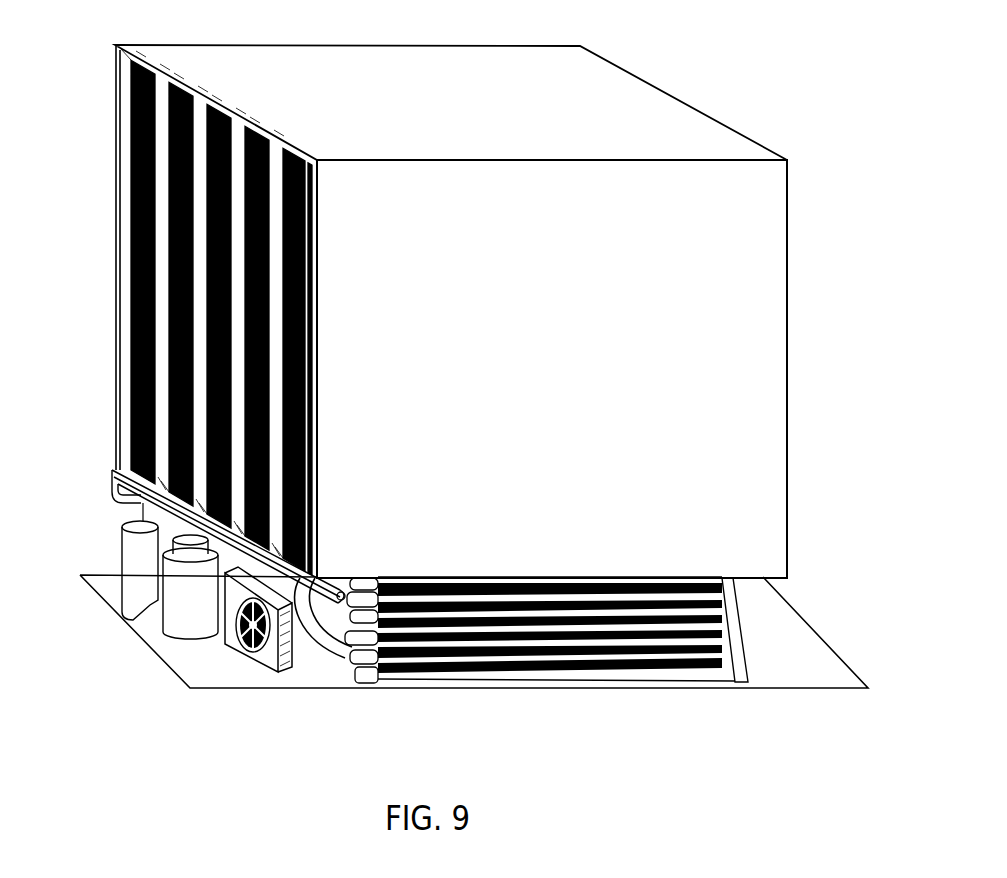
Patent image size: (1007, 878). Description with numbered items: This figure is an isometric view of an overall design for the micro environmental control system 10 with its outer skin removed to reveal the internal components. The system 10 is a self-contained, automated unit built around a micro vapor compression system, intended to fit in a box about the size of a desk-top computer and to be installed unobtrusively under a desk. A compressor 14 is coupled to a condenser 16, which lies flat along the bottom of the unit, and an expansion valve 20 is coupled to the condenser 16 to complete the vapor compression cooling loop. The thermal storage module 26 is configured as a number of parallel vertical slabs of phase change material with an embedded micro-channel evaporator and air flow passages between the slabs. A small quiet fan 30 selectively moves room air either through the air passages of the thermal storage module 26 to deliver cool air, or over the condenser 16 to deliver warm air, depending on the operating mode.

The system 10 is at (748, 73).
The thermal storage module 26 is at (121, 323).
The expansion valve 20 is at (118, 545).
The compressor 14 is at (173, 621).
The fan 30 is at (233, 640).
The condenser 16 is at (567, 668).